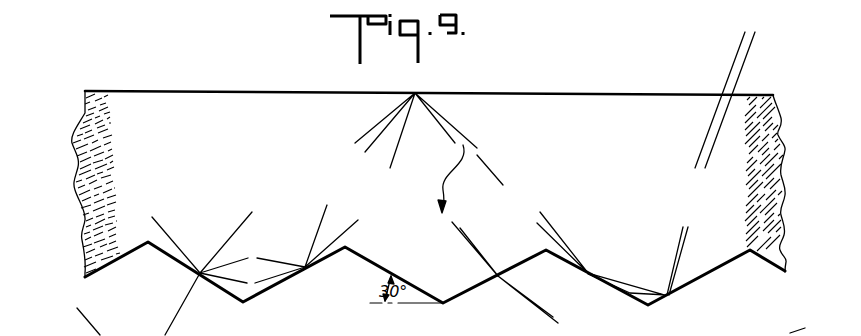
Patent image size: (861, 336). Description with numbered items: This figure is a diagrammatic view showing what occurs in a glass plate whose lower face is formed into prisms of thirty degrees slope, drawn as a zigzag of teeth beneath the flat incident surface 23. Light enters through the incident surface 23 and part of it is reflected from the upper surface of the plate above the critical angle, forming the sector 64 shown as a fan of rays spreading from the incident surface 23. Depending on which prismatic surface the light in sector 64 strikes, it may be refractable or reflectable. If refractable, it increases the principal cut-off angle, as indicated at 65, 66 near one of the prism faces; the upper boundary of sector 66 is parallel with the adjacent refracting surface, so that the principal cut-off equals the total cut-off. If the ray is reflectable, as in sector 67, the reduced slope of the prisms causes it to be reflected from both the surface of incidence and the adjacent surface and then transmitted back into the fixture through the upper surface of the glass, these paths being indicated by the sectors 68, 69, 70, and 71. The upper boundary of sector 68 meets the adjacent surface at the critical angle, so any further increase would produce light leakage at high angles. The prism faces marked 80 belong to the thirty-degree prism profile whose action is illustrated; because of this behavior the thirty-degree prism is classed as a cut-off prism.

The incident surface 23 is at (211, 91).
The sector 64 is at (453, 133).
The increased principal cut-off angle indication 65 is at (450, 230).
The sector 66 is at (543, 308).
The sector 67 is at (553, 237).
The sector 68 is at (622, 282).
The sector 69 is at (685, 245).
The sector 70 is at (705, 157).
The sector 71 is at (740, 58).
The serration groove 80 is at (435, 289).